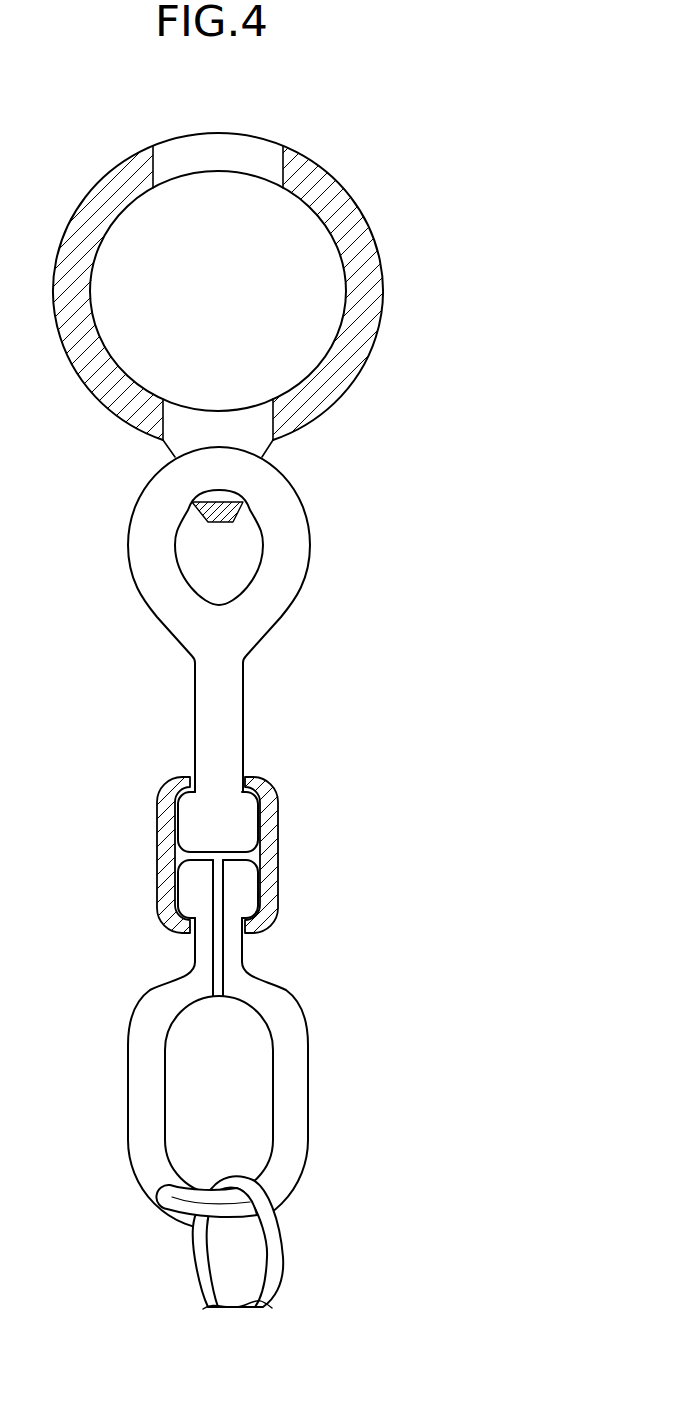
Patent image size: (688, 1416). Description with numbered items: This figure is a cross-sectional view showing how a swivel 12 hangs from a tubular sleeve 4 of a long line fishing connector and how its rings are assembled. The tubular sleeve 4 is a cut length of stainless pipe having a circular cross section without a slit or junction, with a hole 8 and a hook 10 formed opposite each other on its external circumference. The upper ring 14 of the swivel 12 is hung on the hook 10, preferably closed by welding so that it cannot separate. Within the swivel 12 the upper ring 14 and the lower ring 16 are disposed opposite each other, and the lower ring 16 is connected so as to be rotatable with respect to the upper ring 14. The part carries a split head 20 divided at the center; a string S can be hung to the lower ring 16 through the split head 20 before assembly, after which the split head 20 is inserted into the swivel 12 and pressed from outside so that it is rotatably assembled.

The tubular sleeve 4 is at (383, 278).
The hole 8 is at (237, 154).
The upper ring 14 is at (283, 521).
The hook 10 is at (222, 522).
The swivel 12 is at (272, 858).
The split head 20 is at (202, 890).
The lower ring 16 is at (310, 1075).
The string S is at (282, 1253).